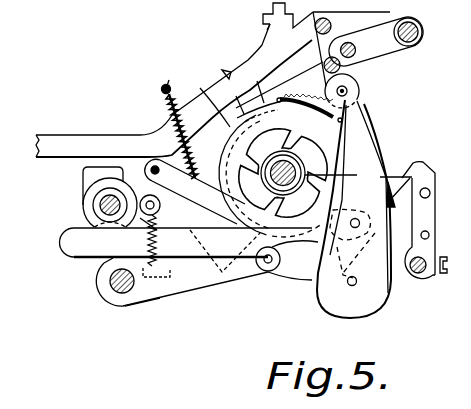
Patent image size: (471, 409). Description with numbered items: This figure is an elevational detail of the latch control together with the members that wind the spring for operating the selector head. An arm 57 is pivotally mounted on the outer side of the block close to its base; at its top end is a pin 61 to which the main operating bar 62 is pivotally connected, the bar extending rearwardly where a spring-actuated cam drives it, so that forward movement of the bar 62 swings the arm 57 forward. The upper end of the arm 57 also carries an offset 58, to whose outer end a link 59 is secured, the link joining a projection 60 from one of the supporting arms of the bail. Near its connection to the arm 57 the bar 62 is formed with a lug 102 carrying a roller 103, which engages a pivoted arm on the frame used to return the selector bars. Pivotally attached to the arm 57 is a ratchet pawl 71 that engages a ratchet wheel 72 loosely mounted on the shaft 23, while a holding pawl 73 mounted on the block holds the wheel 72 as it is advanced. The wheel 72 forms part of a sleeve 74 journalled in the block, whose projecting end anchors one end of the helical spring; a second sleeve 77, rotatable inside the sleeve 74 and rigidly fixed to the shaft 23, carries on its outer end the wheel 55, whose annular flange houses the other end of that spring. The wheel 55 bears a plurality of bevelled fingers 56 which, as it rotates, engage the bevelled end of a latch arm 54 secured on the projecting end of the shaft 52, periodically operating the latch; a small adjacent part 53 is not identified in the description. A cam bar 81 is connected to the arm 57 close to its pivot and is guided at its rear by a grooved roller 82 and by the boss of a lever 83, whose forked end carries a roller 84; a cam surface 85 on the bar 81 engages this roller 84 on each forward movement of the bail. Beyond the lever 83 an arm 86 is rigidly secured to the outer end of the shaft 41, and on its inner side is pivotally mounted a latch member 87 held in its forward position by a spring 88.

The operating bar 62 is at (72, 135).
The lug 102 is at (263, 14).
The roller 103 is at (267, 28).
The ratchet pawl 71 is at (206, 100).
The holding pawl 73 is at (172, 112).
The latch member 87 is at (109, 167).
The grooved roller 82 is at (95, 203).
The spring 88 is at (165, 228).
The cam bar 81 is at (198, 252).
The arm 86 is at (100, 267).
The shaft 41 is at (122, 294).
The lever 83 is at (162, 297).
The cam surface 85 is at (247, 257).
The roller 84 is at (273, 271).
The ratchet wheel 72 is at (252, 170).
The shaft 23 is at (298, 195).
The sleeve 74 is at (302, 164).
The pin 61 is at (316, 19).
The link 59 is at (398, 44).
The offset 58 is at (398, 11).
The projection 60 is at (356, 52).
The wheel 55 is at (382, 128).
The arm 57 is at (380, 292).
The sleeve 77 is at (352, 231).
The bevelled fingers 56 is at (395, 172).
The latch arm 54 is at (430, 175).
The shaft 52 is at (422, 273).
The clip 53 is at (443, 265).